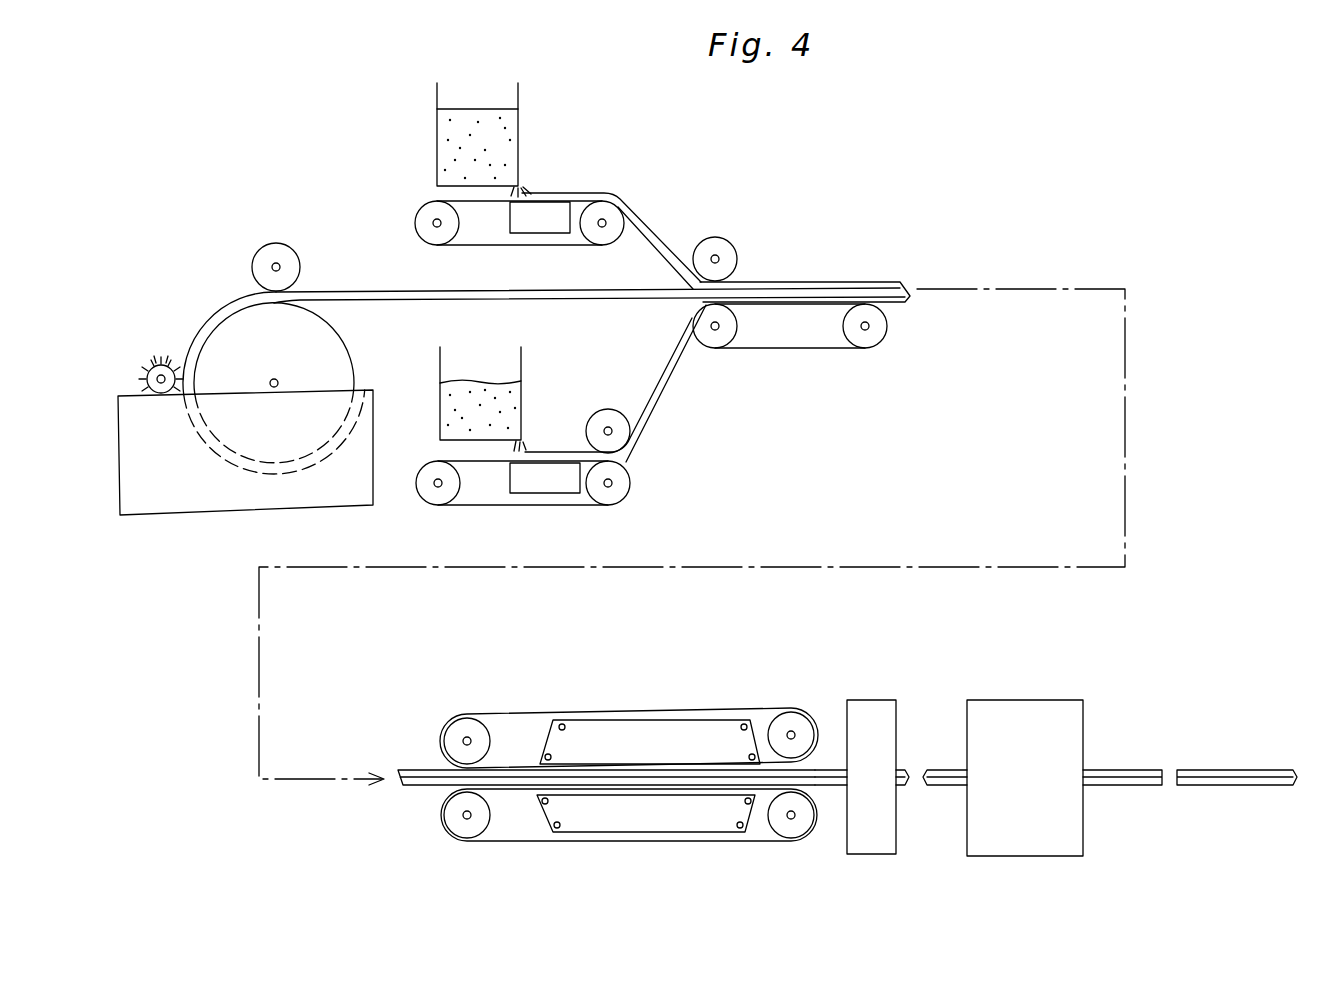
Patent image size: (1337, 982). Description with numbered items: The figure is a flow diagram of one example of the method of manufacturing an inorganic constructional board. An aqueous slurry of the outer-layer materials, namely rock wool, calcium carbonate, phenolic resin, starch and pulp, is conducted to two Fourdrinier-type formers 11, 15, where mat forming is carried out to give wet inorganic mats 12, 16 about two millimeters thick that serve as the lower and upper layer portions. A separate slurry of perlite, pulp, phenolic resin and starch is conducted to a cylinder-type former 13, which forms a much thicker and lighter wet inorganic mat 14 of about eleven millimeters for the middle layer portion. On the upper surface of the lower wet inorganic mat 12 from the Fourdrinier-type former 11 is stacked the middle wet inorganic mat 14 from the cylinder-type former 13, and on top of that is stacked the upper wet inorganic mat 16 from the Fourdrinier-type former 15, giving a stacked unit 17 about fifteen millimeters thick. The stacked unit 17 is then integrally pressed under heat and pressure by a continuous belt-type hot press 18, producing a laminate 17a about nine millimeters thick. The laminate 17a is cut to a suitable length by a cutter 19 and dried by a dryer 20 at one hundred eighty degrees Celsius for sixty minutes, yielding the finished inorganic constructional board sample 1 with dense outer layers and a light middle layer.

The inorganic constructional board sample 1 is at (1221, 788).
The Fourdrinier-type former 11 is at (522, 395).
The wet inorganic mat 12 is at (666, 385).
The cylinder-type former 13 is at (367, 395).
The wet inorganic mat 14 is at (370, 290).
The Fourdrinier-type former 15 is at (508, 122).
The wet inorganic mat 16 is at (661, 233).
The stacked unit 17 is at (821, 282).
The laminate 17a is at (822, 765).
The continuous belt-type hot press 18 is at (660, 707).
The cutter 19 is at (871, 713).
The dryer 20 is at (1025, 713).